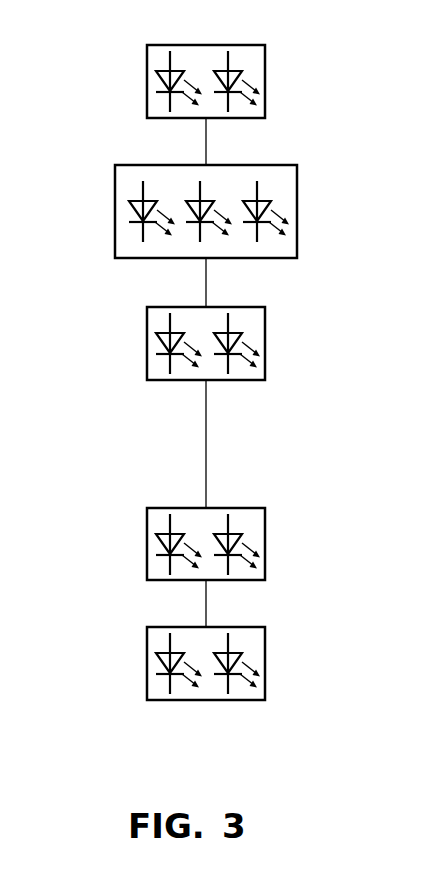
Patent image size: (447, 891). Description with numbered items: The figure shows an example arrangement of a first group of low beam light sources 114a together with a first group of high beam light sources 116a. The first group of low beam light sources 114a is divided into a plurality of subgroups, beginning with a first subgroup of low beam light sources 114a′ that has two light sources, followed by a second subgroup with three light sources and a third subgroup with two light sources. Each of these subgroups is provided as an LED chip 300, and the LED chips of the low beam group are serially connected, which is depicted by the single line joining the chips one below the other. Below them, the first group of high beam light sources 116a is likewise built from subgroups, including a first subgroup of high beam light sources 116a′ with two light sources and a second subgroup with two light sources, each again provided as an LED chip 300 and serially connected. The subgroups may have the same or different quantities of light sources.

The LED chip 300 is at (266, 58).
The first group of low beam light sources 114a is at (123, 44).
The first subgroup of low beam light sources 114a′ is at (284, 88).
The first group of high beam light sources 116a is at (130, 500).
The first subgroup of high beam light sources 116a′ is at (274, 552).